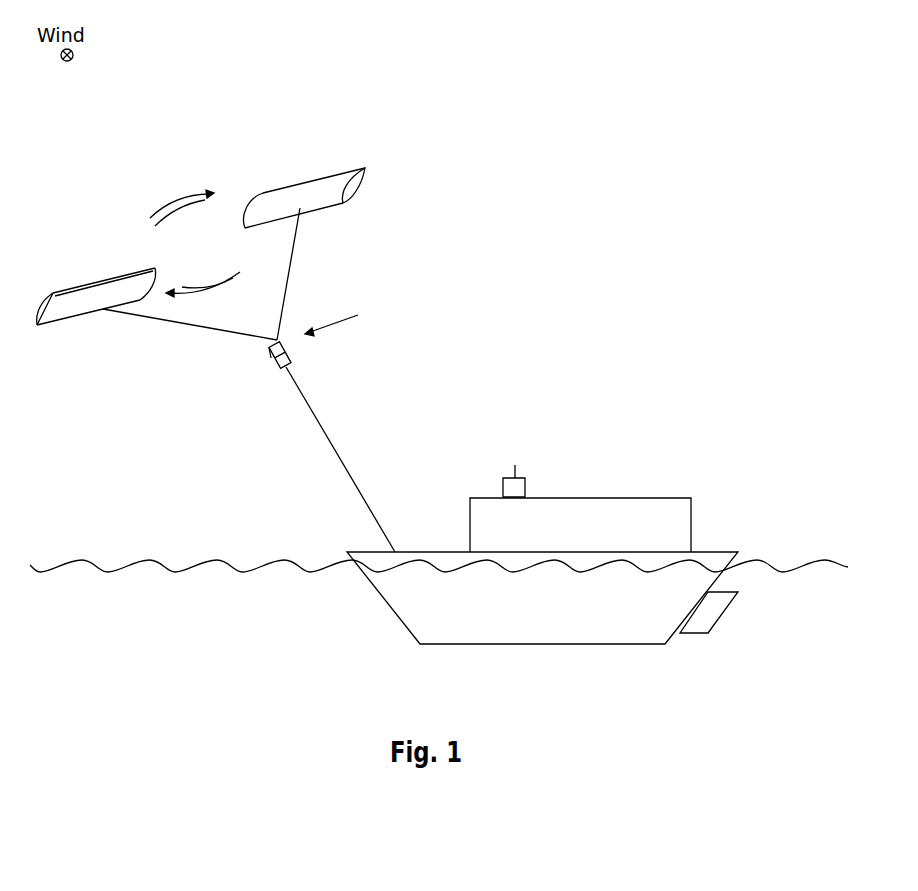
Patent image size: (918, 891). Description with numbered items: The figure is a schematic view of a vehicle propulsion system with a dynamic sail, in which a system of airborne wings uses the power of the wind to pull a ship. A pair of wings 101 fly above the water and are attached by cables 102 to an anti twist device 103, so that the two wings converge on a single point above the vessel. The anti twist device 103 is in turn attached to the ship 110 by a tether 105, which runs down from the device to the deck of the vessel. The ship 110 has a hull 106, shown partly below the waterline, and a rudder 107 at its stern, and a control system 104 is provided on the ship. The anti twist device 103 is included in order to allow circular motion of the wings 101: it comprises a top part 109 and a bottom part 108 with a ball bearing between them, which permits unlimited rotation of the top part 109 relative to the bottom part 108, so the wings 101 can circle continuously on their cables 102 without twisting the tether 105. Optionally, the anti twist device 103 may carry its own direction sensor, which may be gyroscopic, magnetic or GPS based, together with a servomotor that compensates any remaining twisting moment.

The wings 101 is at (370, 180).
The cables 102 is at (290, 280).
The anti twist device 103 is at (362, 316).
The control system 104 is at (526, 488).
The tether 105 is at (305, 390).
The hull 106 is at (420, 593).
The rudder 107 is at (717, 608).
The bottom part 108 is at (281, 371).
The top part 109 is at (270, 360).
The ship 110 is at (687, 518).